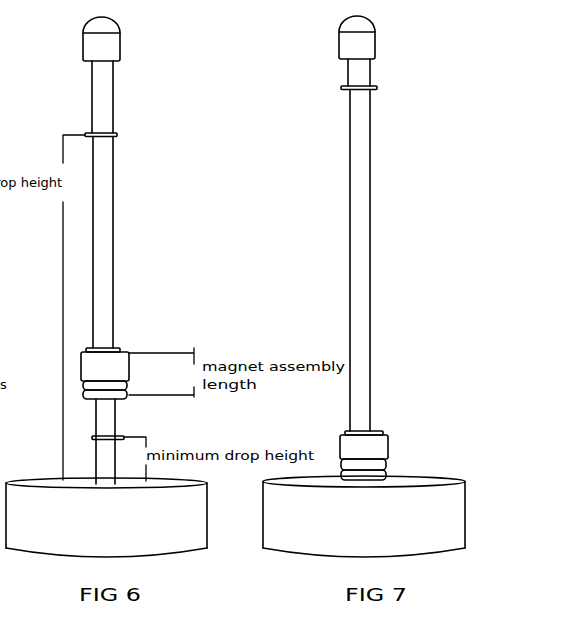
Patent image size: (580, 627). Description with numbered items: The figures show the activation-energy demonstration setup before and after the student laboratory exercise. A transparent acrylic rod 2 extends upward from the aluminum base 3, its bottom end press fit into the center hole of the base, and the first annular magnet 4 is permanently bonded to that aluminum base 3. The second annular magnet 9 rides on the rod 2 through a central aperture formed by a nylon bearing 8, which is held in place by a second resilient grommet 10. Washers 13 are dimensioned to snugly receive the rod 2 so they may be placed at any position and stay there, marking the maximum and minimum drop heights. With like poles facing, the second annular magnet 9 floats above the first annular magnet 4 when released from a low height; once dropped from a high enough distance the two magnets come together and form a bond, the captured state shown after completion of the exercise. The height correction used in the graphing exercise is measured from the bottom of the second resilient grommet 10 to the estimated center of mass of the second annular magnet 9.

The rod 2 is at (370, 161).
The washers 13 is at (377, 87).
The nylon bearing 8 is at (383, 432).
The second annular magnet 9 is at (388, 447).
The second resilient grommet 10 is at (386, 466).
The aluminum base 3 is at (465, 515).
The first annular magnet 4 is at (424, 551).